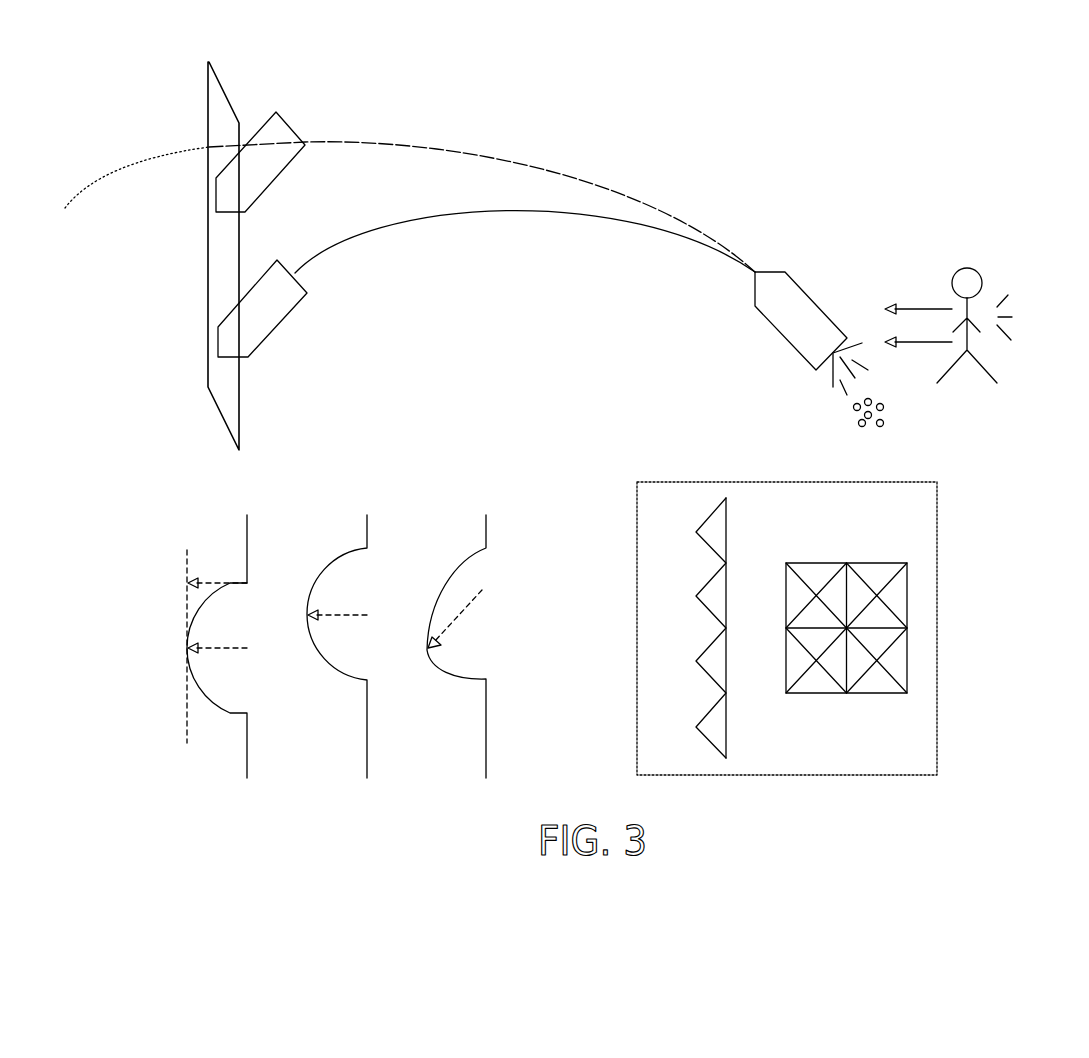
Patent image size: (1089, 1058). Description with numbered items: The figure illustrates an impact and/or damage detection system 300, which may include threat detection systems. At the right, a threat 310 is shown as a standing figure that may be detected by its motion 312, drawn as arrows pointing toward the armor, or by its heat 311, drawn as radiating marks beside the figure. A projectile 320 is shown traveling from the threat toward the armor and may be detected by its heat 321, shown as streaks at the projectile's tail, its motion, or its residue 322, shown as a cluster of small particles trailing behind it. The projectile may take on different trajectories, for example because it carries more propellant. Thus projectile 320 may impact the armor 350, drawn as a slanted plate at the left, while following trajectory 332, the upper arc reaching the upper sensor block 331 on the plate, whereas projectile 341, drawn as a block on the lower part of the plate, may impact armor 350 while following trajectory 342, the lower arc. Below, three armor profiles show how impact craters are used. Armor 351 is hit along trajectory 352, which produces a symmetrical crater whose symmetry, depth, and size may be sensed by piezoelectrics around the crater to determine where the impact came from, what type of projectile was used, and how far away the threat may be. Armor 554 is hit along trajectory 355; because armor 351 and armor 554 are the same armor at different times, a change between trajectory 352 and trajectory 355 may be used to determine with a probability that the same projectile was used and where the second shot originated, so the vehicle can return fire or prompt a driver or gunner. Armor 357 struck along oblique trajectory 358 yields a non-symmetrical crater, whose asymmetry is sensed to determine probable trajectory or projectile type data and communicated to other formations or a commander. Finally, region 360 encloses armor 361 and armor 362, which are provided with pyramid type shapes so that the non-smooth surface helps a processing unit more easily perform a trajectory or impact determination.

The impact and/or damage detection system 300 is at (1013, 490).
The threat 310 is at (966, 268).
The heat 311 is at (1002, 300).
The motion 312 is at (922, 307).
The projectile 320 is at (767, 317).
The heat 321 is at (833, 380).
The residue 322 is at (862, 423).
The first sensor 331 is at (276, 165).
The trajectory 332 is at (142, 160).
The projectile 341 is at (290, 312).
The trajectory 342 is at (365, 222).
The armor 350 is at (222, 92).
The armor 351 is at (247, 525).
The trajectory 352 is at (247, 645).
The second shape profile 554 is at (367, 530).
The trajectory 355 is at (367, 612).
The armor 357 is at (486, 528).
The trajectory 358 is at (484, 590).
The pattern region 360 is at (637, 630).
The armor 361 is at (712, 512).
The armor 362 is at (833, 562).